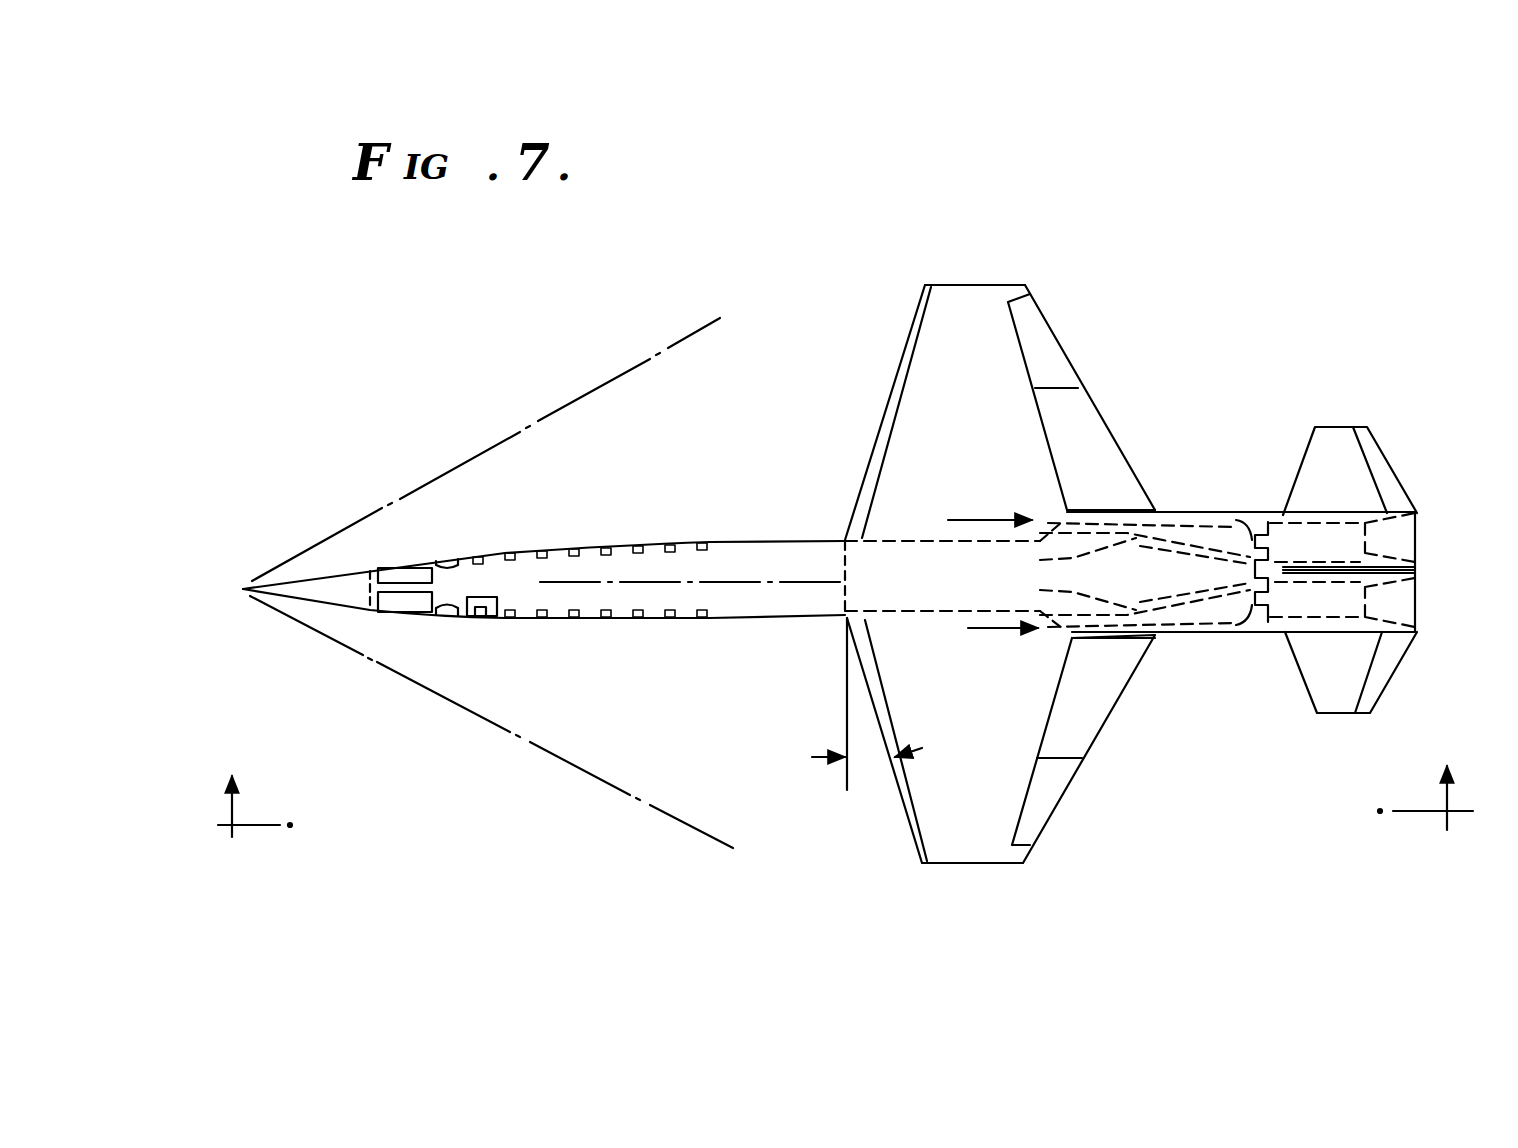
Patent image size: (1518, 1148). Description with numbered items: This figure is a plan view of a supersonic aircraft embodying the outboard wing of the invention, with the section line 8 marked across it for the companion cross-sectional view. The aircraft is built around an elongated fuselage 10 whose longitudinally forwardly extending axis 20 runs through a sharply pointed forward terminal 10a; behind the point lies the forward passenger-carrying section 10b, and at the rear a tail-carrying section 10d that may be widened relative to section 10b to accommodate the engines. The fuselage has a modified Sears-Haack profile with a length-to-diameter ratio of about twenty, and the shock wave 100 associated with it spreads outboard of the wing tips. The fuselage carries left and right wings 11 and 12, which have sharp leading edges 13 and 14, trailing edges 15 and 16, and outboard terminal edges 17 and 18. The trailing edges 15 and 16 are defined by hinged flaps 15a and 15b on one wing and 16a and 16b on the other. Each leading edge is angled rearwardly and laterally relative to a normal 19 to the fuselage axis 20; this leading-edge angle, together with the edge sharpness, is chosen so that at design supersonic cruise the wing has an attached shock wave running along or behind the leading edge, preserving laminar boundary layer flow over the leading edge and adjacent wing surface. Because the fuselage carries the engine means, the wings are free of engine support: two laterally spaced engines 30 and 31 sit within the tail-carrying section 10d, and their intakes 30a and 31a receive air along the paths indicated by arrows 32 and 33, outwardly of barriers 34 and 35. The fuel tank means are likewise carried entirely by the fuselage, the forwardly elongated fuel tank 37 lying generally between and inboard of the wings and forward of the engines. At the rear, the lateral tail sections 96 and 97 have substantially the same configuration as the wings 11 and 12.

The fuselage 10 is at (617, 522).
The forward terminal 10a is at (243, 589).
The forward passenger-carrying section 10b is at (622, 622).
The tail-carrying section 10d is at (1262, 515).
The left wing 11 is at (1001, 740).
The right wing 12 is at (1000, 412).
The leading edge 13 is at (905, 820).
The leading edge 14 is at (905, 347).
The trailing edge 15 is at (1098, 742).
The hinged flap 15a is at (1040, 808).
The hinged flap 15b is at (1098, 712).
The trailing edge 16 is at (1075, 377).
The hinged flap 16a is at (1035, 330).
The hinged flap 16b is at (1100, 440).
The outboard terminal edge 17 is at (948, 865).
The outboard terminal edge 18 is at (968, 283).
The normal 19 is at (840, 698).
The fuselage longitudinal axis 20 is at (762, 582).
The engine 30 is at (1365, 650).
The intake 30a is at (1232, 634).
The engine 31 is at (1347, 515).
The intake 31a is at (1242, 515).
The arrow 32 is at (968, 628).
The arrow 33 is at (966, 520).
The barrier 34 is at (1155, 598).
The barrier 35 is at (1068, 545).
The fuel tank 37 is at (915, 598).
The lateral tail section 96 is at (1333, 700).
The lateral tail section 97 is at (1335, 440).
The shock wave 100 is at (470, 460).
The section line 8- 8 is at (835, 790).